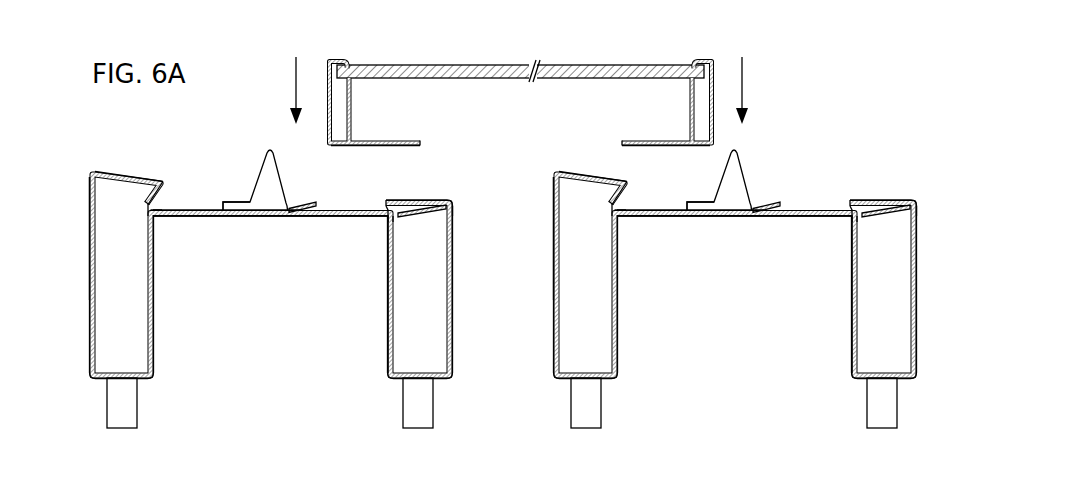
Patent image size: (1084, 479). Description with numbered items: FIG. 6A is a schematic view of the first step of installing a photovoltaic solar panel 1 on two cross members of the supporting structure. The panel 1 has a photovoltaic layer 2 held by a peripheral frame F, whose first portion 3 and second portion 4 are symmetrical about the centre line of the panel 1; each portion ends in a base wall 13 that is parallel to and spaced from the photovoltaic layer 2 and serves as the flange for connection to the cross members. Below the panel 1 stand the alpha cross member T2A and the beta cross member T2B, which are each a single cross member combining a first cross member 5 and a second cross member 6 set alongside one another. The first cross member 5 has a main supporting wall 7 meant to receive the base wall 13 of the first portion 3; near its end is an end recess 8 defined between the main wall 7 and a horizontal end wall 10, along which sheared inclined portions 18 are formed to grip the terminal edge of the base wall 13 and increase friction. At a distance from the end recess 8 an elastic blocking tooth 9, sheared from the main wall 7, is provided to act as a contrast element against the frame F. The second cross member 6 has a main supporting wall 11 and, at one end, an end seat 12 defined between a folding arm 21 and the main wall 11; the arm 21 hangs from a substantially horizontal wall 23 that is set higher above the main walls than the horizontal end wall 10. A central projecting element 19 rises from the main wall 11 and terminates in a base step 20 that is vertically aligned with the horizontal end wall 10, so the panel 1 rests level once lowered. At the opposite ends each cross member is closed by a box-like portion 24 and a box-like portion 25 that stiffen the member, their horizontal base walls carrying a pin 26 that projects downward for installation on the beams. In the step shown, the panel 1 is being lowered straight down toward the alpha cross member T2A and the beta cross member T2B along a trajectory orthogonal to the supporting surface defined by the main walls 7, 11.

The photovoltaic solar panel 1 is at (519, 73).
The photovoltaic layer 2 is at (466, 64).
The first portion of the frame 3 is at (323, 108).
The second portion of the frame 4 is at (720, 104).
The first cross member 5 is at (362, 228).
The second cross member 6 is at (86, 208).
The main supporting wall 7 is at (340, 218).
The end recess 8 is at (388, 208).
The elastic blocking tooth 9 is at (305, 203).
The horizontal end wall 10 is at (400, 200).
The main supporting wall 11 is at (195, 209).
The end seat 12 is at (152, 209).
The base wall 13 is at (379, 140).
The inclined portion 18 is at (413, 218).
The central projecting element 19 is at (254, 185).
The base step 20 is at (232, 203).
The arm 21 is at (144, 192).
The substantially horizontal wall 23 is at (128, 171).
The box-like portion 24 is at (455, 325).
The box-like portion 25 is at (87, 326).
The pin 26 is at (134, 405).
The peripheral frame F is at (335, 54).
The alpha cross member T2A is at (273, 370).
The beta cross member T2B is at (748, 370).